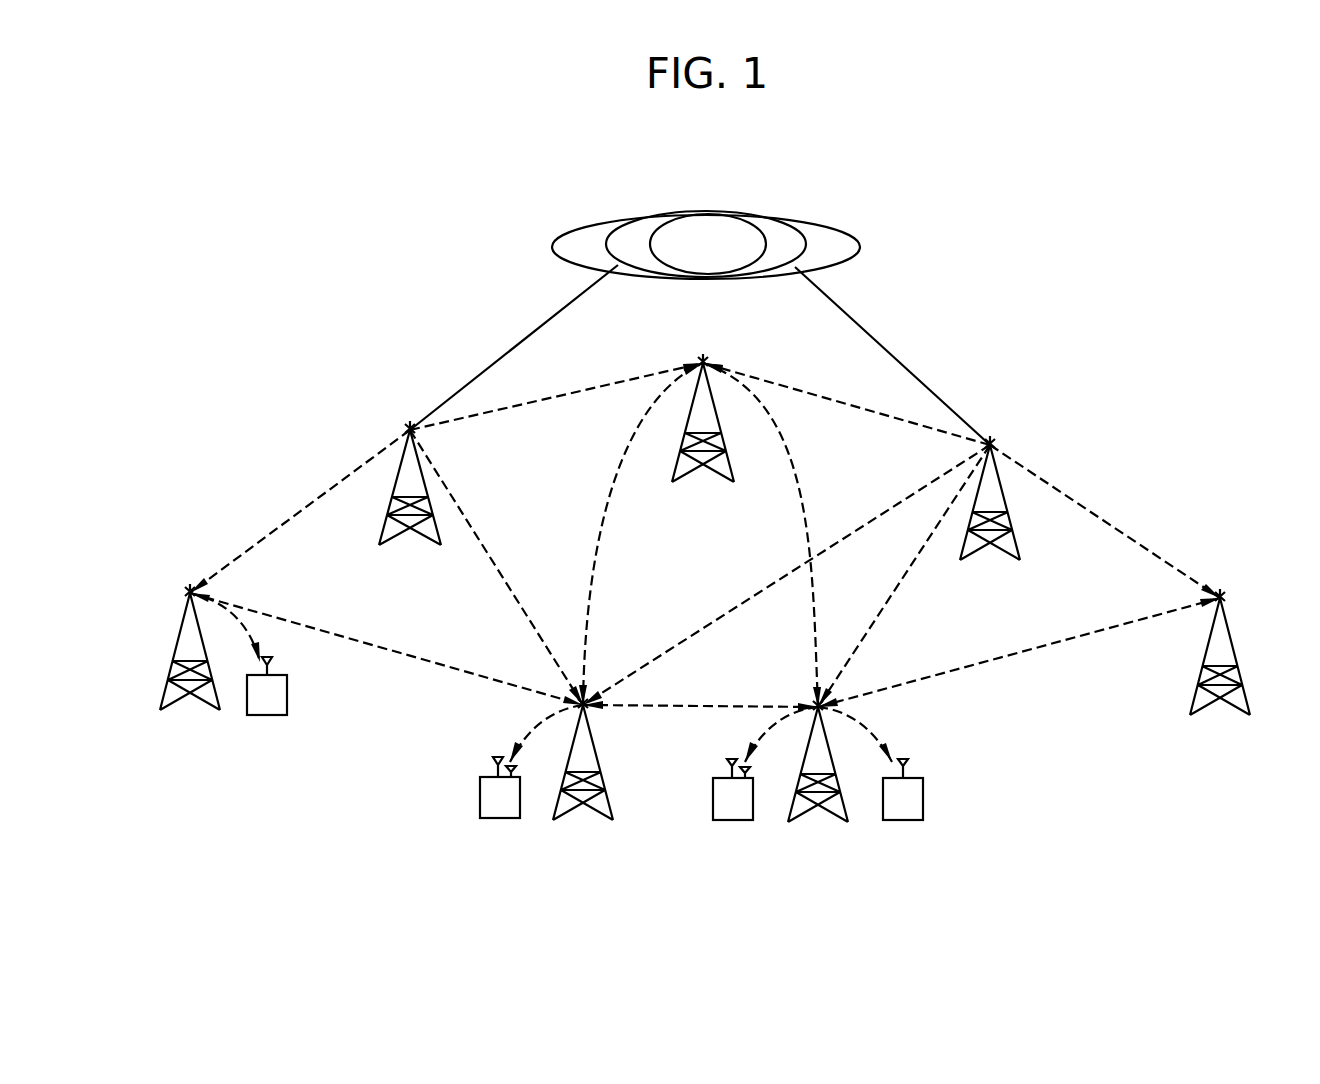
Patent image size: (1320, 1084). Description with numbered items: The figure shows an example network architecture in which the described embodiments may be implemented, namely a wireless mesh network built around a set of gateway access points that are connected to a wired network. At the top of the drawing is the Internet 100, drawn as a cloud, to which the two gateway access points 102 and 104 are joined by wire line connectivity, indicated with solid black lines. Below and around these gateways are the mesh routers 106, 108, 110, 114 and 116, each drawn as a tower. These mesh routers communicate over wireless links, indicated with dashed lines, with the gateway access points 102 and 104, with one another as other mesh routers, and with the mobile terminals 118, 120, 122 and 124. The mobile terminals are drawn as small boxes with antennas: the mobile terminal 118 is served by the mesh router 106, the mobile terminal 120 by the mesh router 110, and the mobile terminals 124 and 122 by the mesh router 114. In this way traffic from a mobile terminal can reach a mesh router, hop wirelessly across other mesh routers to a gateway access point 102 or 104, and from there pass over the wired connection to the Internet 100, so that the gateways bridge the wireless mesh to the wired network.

The Internet 100 is at (858, 230).
The gateway access point 102 is at (993, 547).
The gateway access point 104 is at (413, 532).
The mesh router 106 is at (193, 696).
The mesh router 108 is at (706, 468).
The mesh router 110 is at (586, 807).
The mesh router 114 is at (821, 809).
The mesh router 116 is at (1223, 701).
The mobile terminal 118 is at (268, 715).
The mobile terminal 120 is at (500, 818).
The mobile terminal 122 is at (905, 820).
The mobile terminal 124 is at (730, 820).